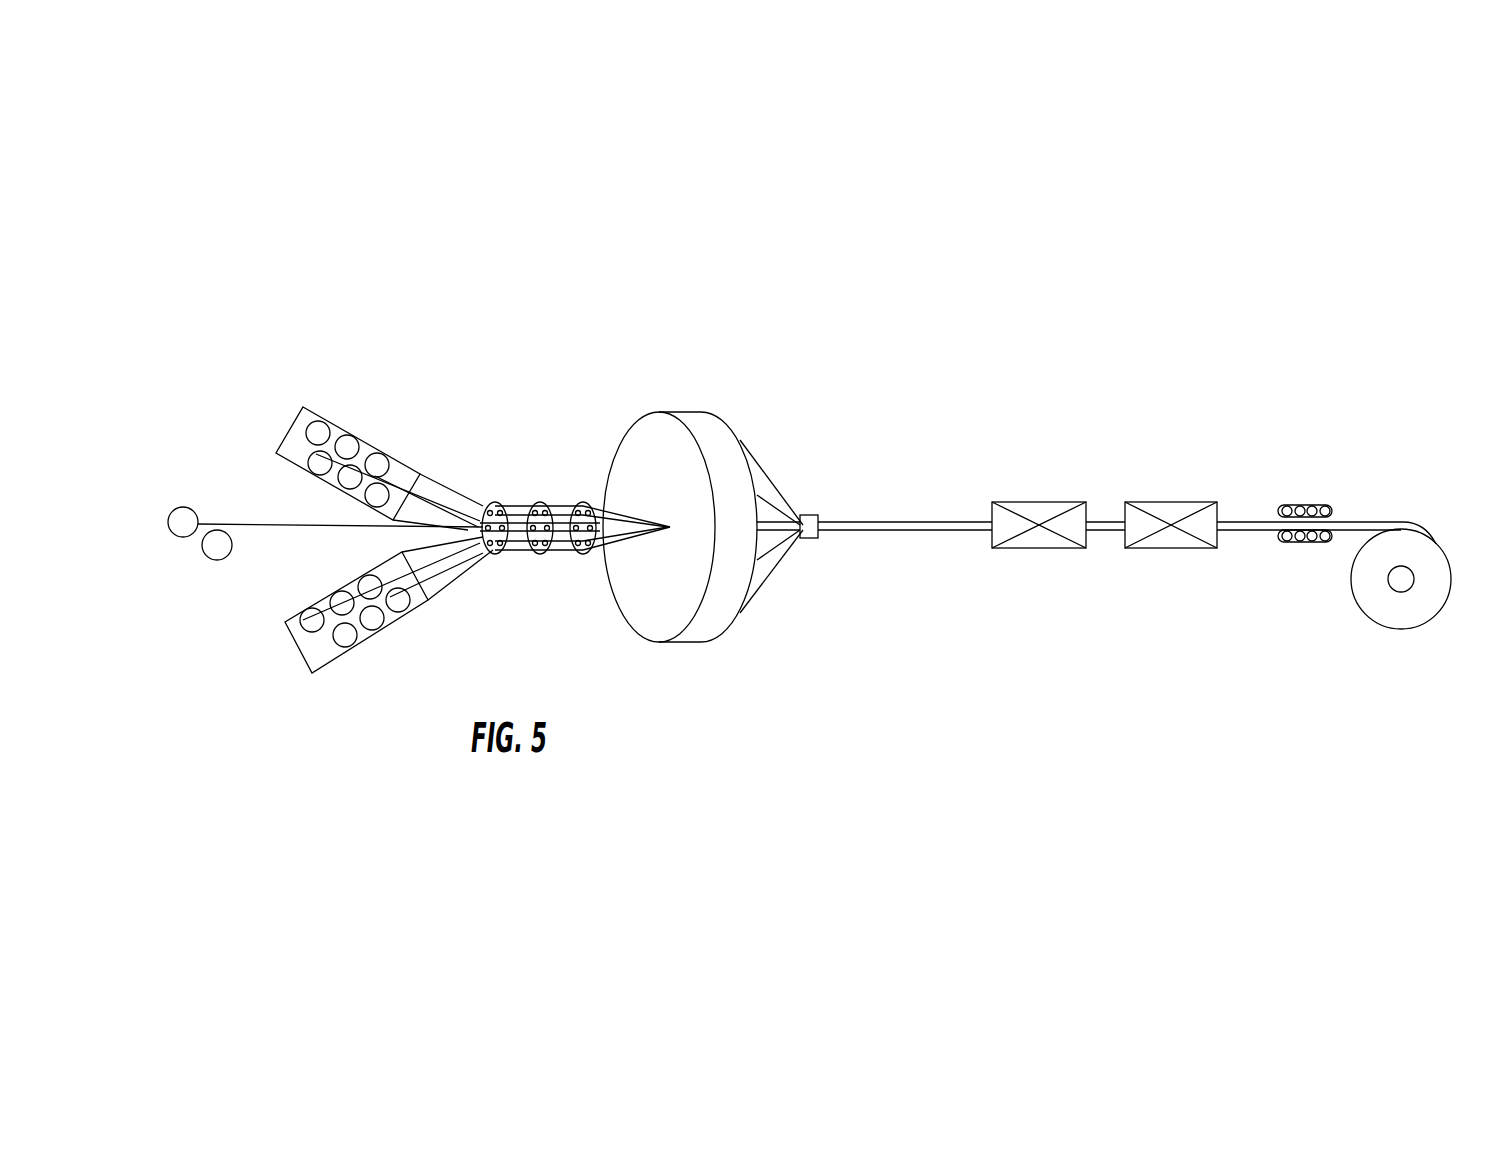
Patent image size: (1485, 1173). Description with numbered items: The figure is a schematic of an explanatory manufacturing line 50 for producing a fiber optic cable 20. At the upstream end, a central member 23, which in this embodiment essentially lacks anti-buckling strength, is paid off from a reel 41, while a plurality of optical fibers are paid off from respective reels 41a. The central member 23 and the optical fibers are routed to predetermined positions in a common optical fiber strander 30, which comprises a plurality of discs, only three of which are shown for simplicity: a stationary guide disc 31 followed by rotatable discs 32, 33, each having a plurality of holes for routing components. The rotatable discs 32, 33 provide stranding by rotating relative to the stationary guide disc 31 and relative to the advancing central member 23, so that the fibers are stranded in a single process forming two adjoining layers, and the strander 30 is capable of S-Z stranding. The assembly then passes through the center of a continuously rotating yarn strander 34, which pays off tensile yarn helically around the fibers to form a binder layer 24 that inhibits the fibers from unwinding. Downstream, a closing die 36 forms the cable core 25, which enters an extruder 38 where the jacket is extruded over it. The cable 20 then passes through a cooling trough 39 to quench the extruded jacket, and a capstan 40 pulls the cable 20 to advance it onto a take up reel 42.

The manufacturing line 50 is at (288, 366).
The reel 41 is at (172, 536).
The reels 41a is at (322, 453).
The central member 23 is at (352, 533).
The common optical fiber strander 30 is at (524, 566).
The stationary guide disc 31 is at (487, 501).
The rotatable disc 32 is at (538, 501).
The rotatable disc 33 is at (585, 501).
The yarn strander 34 is at (672, 642).
The binder layer 24 is at (768, 580).
The closing die 36 is at (812, 512).
The cable core 25 is at (918, 519).
The extruder 38 is at (1004, 502).
The cooling trough 39 is at (1140, 502).
The cable 20 is at (1240, 533).
The capstan 40 is at (1295, 505).
The take up reel 42 is at (1393, 594).